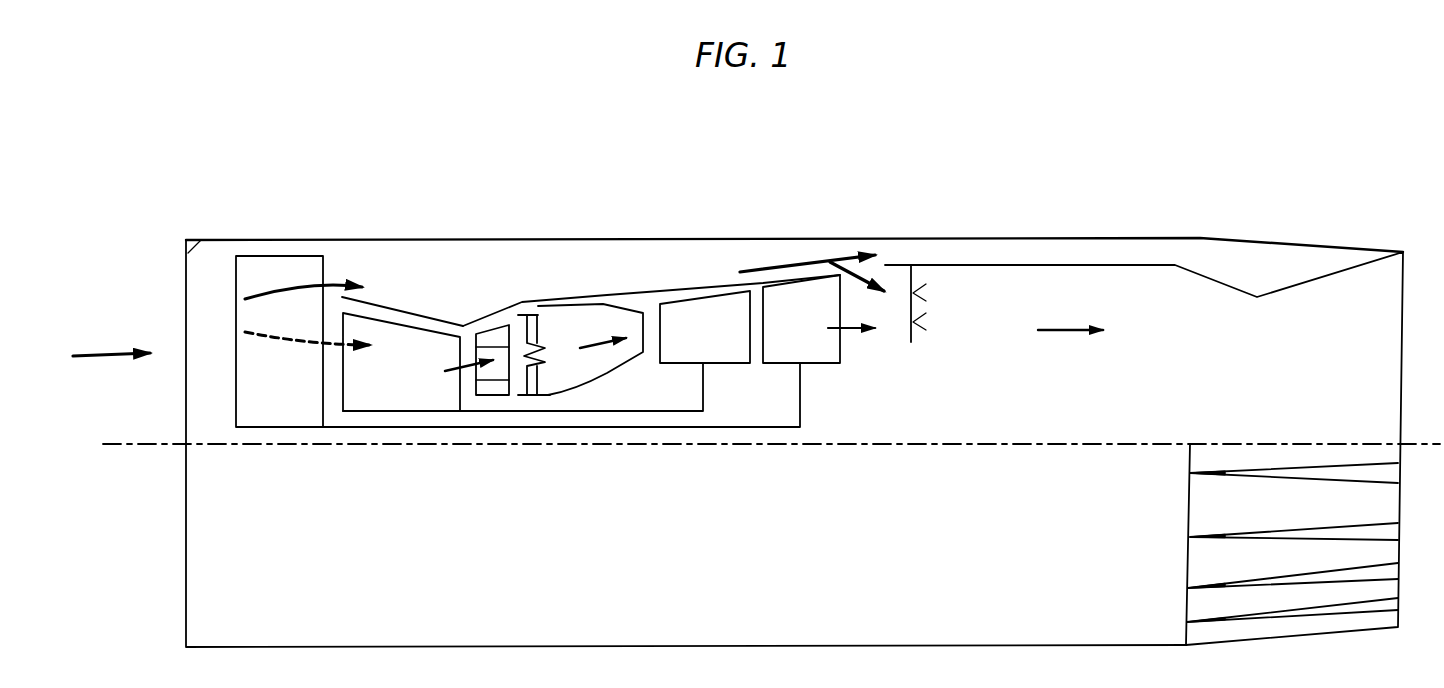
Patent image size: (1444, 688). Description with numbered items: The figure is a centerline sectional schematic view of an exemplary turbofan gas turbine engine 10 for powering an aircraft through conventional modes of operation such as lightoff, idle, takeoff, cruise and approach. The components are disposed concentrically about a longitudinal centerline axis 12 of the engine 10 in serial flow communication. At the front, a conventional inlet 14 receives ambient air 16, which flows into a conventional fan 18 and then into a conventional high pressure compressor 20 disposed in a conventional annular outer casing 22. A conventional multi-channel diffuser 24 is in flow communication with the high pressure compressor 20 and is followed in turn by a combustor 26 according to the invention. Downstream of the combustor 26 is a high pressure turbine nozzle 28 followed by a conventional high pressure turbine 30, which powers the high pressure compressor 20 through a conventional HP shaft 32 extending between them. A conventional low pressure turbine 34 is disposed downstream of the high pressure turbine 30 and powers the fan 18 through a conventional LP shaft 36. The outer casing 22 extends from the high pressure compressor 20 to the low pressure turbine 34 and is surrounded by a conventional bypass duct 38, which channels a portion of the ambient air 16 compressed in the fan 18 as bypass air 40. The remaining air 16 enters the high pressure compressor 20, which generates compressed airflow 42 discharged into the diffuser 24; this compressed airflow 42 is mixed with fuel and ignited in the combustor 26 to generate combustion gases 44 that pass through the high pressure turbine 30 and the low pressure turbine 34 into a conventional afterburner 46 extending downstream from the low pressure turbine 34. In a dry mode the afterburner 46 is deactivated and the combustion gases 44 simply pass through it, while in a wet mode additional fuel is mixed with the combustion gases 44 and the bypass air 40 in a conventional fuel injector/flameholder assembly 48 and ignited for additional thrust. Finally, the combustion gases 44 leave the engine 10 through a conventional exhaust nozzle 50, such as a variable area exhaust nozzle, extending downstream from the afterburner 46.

The turbofan gas turbine engine 10 is at (678, 206).
The longitudinal centerline axis 12 is at (155, 452).
The inlet 14 is at (185, 260).
The ambient air 16 is at (143, 342).
The fan 18 is at (263, 389).
The high pressure compressor 20 is at (381, 389).
The annular outer casing 22 is at (567, 295).
The multi-channel diffuser 24 is at (490, 396).
The combustor 26 is at (548, 396).
The high pressure turbine nozzle 28 is at (625, 373).
The high pressure turbine 30 is at (689, 344).
The HP shaft 32 is at (672, 411).
The low pressure turbine 34 is at (781, 325).
The LP shaft 36 is at (753, 427).
The bypass duct 38 is at (414, 288).
The bypass air 40 is at (793, 268).
The compressed airflow 42 is at (448, 372).
The combustion gases 44 is at (603, 342).
The afterburner 46 is at (1051, 389).
The fuel injector/flameholder assembly 48 is at (911, 338).
The exhaust nozzle 50 is at (1312, 243).